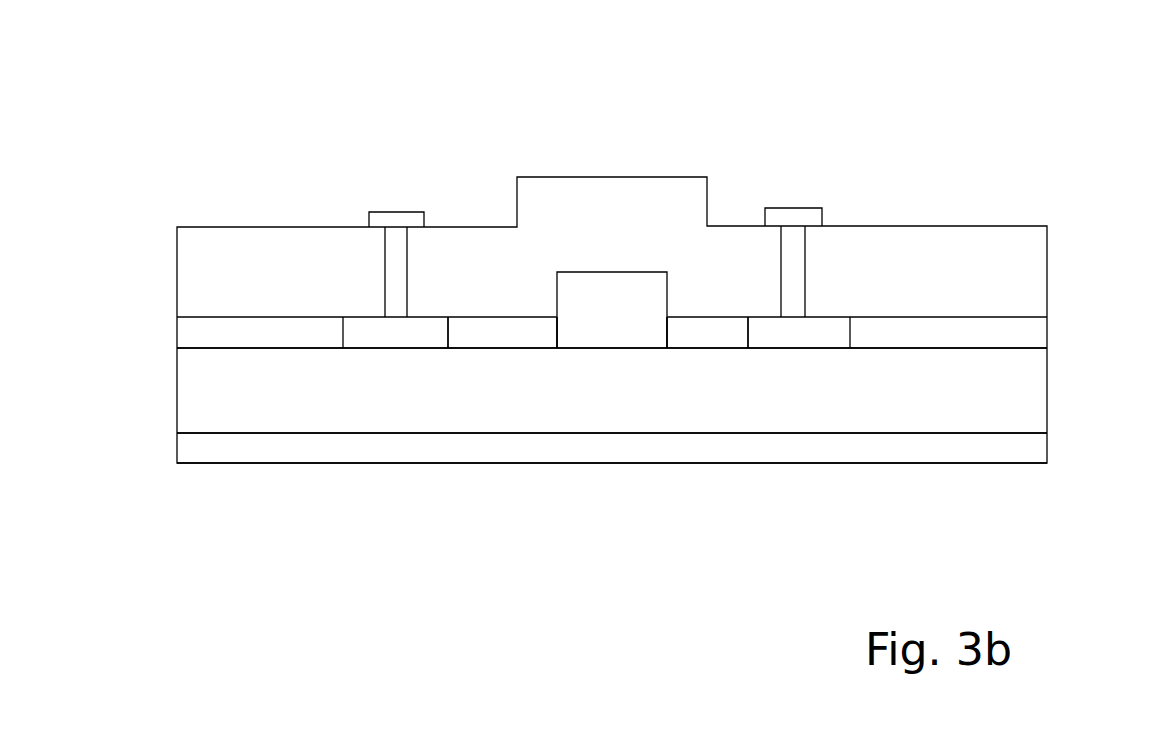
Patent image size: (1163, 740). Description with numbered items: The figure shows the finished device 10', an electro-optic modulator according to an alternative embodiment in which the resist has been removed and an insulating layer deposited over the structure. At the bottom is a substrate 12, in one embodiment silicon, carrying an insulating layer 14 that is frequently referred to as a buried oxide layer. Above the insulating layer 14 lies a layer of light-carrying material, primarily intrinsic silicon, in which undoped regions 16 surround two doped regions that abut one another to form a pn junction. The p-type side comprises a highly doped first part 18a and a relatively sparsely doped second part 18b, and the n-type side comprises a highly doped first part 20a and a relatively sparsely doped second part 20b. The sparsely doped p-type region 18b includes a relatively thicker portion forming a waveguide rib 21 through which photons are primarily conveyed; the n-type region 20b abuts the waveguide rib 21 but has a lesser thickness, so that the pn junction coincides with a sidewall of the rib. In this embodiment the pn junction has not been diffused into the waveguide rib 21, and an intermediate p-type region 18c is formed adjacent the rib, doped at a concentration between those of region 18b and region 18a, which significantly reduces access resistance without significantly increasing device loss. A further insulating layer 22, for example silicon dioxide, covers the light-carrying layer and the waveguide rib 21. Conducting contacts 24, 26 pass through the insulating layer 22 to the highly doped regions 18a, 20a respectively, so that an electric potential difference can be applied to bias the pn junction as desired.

The finished device 10' is at (223, 85).
The substrate 12 is at (180, 451).
The insulating layer 14 is at (178, 405).
The undoped regions 16 is at (183, 333).
The first part of p-type region 18a is at (798, 342).
The second part of p-type region 18b is at (623, 337).
The intermediate p-type region 18c is at (707, 338).
The first part of n-type region 20a is at (372, 335).
The second part of n-type region 20b is at (504, 345).
The waveguide rib 21 is at (618, 305).
The further insulating layer 22 is at (193, 228).
The contact 24 is at (790, 208).
The contact 26 is at (394, 212).